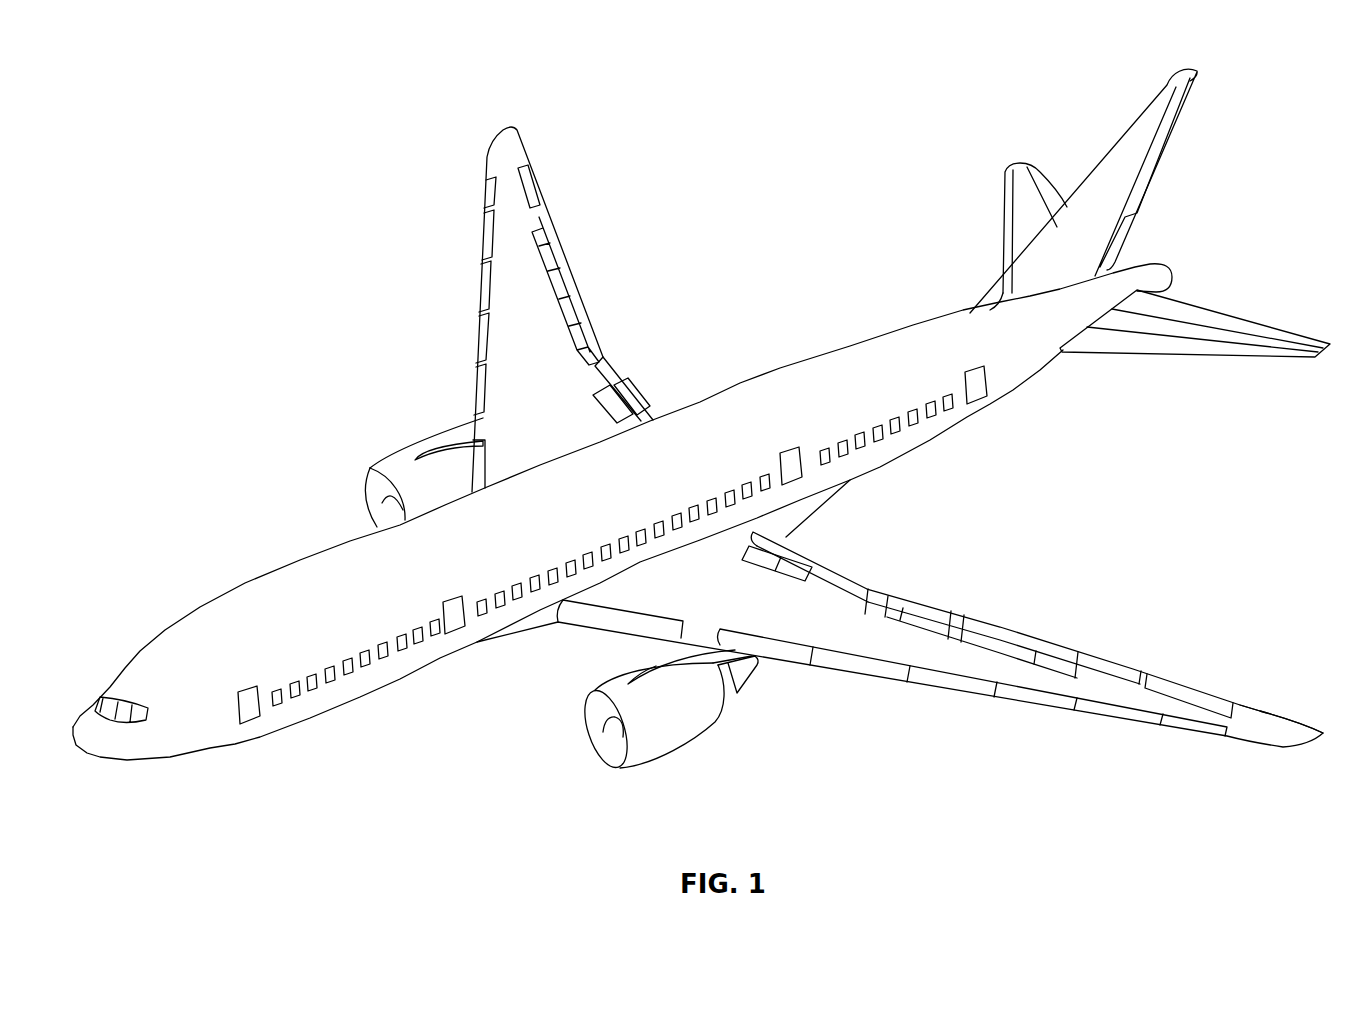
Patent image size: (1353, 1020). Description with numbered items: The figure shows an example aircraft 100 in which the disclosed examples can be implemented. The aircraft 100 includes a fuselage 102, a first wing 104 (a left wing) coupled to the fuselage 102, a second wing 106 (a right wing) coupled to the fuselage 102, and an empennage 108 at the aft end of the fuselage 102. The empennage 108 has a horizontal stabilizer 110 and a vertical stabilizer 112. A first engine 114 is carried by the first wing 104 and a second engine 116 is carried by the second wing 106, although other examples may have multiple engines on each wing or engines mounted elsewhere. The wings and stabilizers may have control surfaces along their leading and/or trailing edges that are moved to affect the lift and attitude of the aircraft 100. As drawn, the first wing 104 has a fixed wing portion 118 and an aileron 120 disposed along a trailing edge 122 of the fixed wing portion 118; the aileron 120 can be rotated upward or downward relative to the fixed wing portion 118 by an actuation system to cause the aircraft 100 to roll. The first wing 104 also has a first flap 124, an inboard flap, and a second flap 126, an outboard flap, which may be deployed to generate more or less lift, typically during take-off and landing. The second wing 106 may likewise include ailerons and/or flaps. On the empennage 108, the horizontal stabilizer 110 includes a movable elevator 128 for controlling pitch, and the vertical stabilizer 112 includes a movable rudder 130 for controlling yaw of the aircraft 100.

The aircraft 100 is at (291, 130).
The fuselage 102 is at (235, 590).
The first wing 104 is at (877, 637).
The second wing 106 is at (547, 370).
The empennage 108 is at (990, 203).
The horizontal stabilizer 110 is at (1218, 330).
The vertical stabilizer 112 is at (1133, 148).
The first engine 114 is at (609, 742).
The second engine 116 is at (379, 490).
The fixed wing portion 118 is at (951, 657).
The aileron 120 is at (1205, 695).
The trailing edge 122 is at (1150, 678).
The first flap 124 is at (826, 562).
The second flap 126 is at (1078, 658).
The elevator 128 is at (1180, 305).
The rudder 130 is at (1145, 173).